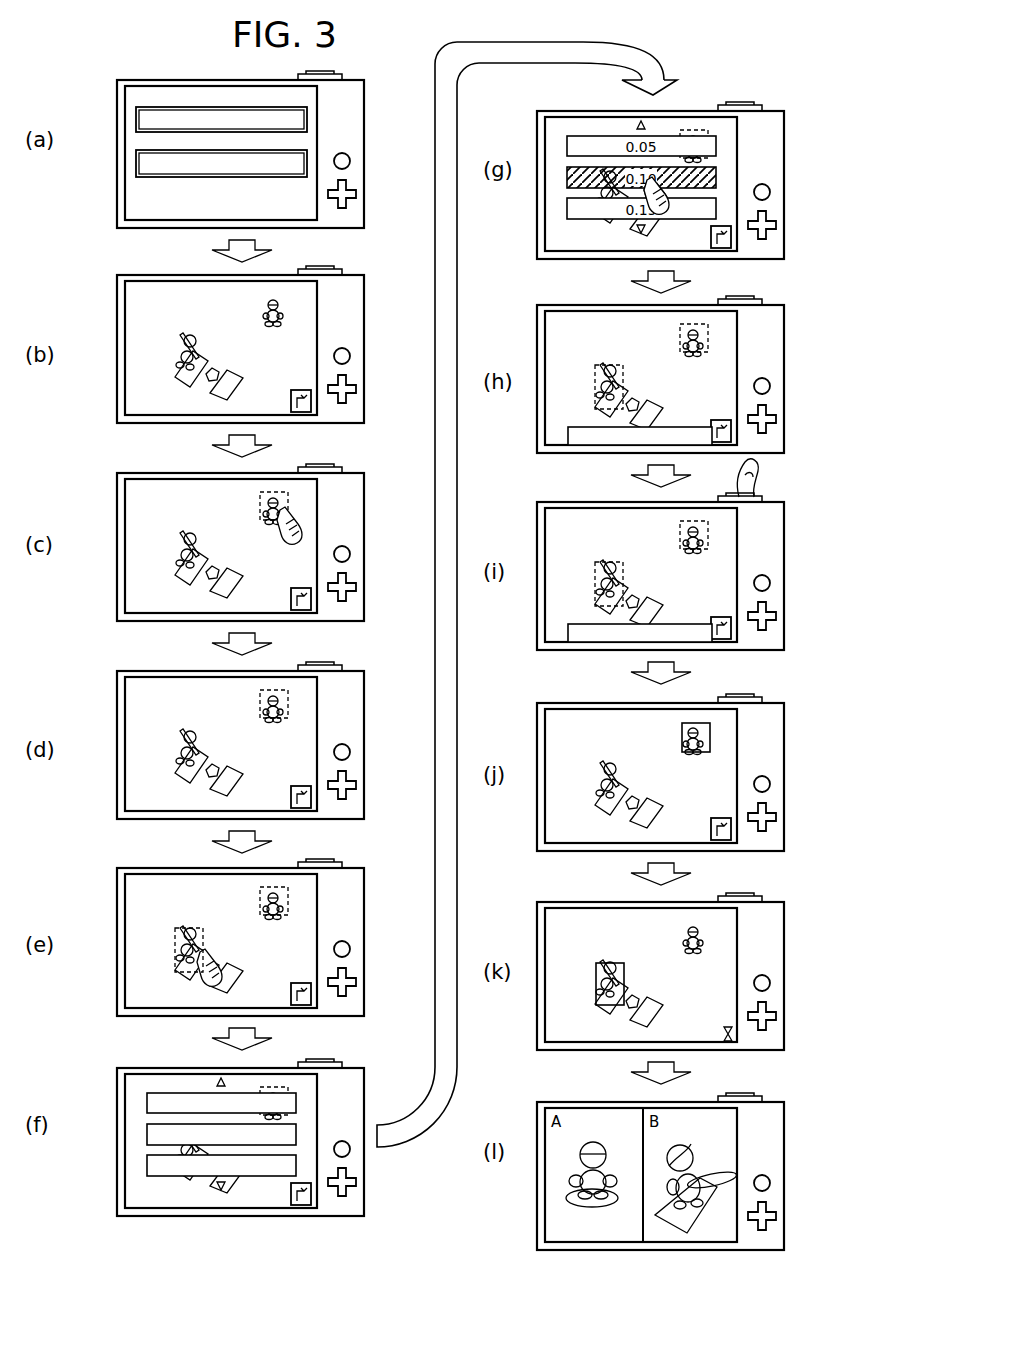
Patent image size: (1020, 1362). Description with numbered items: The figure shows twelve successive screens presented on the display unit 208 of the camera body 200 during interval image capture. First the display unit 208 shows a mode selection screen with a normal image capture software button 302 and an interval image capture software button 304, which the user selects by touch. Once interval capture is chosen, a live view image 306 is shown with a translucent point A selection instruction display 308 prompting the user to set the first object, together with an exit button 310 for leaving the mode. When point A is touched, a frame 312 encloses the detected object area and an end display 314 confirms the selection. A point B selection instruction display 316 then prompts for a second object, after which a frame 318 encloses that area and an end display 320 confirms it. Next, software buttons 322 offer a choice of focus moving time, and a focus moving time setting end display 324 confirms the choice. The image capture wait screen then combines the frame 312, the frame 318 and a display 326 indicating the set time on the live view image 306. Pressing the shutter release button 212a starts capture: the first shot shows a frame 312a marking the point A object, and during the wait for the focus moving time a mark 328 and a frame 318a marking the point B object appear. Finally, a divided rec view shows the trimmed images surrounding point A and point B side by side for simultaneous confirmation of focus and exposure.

The body 200 is at (479, 660).
The display unit 208 is at (580, 682).
The shutter release button 212a is at (760, 496).
The normal image capture software button 302 is at (136, 120).
The interval image capture software button 304 is at (136, 167).
The live view image 306 is at (399, 664).
The point A selection instruction display 308 is at (186, 409).
The exit button 310 is at (511, 715).
The frame 312 is at (445, 622).
The frame 312a is at (682, 740).
The end display 314 is at (158, 608).
The point B selection instruction display 316 is at (186, 806).
The frame 318 is at (437, 668).
The frame 318a is at (610, 963).
The end display 320 is at (158, 1003).
The software buttons 322 is at (158, 1167).
The focus moving time setting end display 324 is at (572, 246).
The display 326 is at (597, 534).
The mark 328 is at (733, 1038).